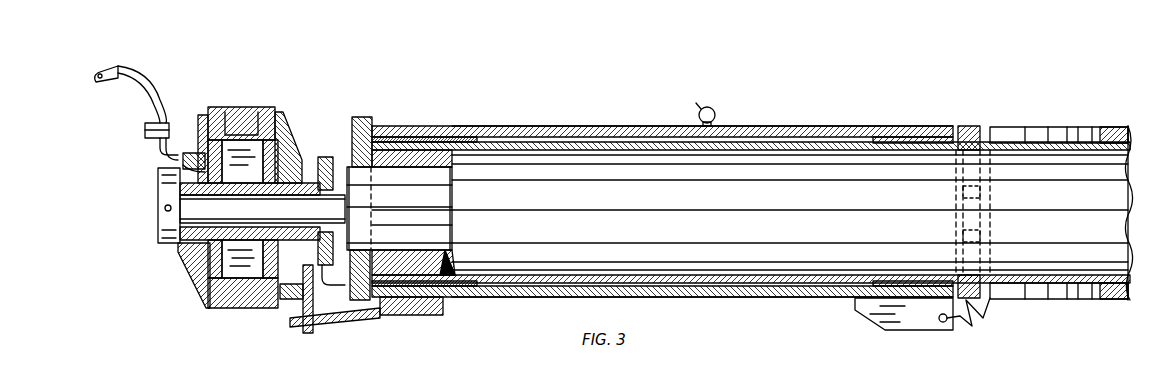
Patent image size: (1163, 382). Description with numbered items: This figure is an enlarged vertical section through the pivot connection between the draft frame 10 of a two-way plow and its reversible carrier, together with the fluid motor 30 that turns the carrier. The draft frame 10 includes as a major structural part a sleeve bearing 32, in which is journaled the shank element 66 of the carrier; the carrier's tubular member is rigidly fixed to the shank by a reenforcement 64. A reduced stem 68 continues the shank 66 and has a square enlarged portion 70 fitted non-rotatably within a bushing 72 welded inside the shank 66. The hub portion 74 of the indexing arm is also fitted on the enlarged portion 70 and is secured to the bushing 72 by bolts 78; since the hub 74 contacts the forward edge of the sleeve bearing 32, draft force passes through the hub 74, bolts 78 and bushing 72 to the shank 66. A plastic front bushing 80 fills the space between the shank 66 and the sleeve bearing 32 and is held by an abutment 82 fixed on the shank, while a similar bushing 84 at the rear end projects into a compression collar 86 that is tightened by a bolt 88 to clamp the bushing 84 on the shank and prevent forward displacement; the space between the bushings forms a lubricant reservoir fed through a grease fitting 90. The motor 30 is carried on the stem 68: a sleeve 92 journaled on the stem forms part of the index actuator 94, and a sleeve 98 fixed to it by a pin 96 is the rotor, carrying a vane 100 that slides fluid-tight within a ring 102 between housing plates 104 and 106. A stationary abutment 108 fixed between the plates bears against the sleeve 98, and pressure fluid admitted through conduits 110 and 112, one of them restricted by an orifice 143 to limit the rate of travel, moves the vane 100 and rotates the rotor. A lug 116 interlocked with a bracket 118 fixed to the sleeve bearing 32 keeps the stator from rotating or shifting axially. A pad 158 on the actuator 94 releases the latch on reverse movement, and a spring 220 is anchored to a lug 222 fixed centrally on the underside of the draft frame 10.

The draft frame 10 is at (670, 90).
The motor 30 is at (172, 271).
The sleeve bearing 32 is at (470, 128).
The reenforcement 64 is at (1050, 130).
The shank element 66 is at (745, 146).
The stem 68 is at (175, 205).
The enlarged portion 70 is at (445, 228).
The bushing 72 is at (452, 188).
The hub portion 74 is at (372, 127).
The bolts 78 is at (318, 300).
The front bushing 80 is at (440, 126).
The abutment 82 is at (505, 125).
The bushing 84 is at (918, 137).
The compression collar 86 is at (972, 126).
The bolt 88 is at (996, 226).
The grease fitting 90 is at (712, 106).
The sleeve 92 is at (165, 182).
The index actuator 94 is at (325, 157).
The pin 96 is at (164, 208).
The sleeve 98 is at (180, 183).
The vane 100 is at (205, 285).
The ring 102 is at (238, 140).
The housing plate 104 is at (200, 140).
The housing plate 106 is at (292, 140).
The stationary abutment 108 is at (248, 130).
The conduit 110 is at (118, 90).
The conduit 112 is at (146, 90).
The lug 116 is at (300, 300).
The bracket 118 is at (348, 316).
The orifice 143 is at (182, 157).
The pad 158 is at (362, 117).
The spring 220 is at (985, 318).
The lug 222 is at (890, 322).